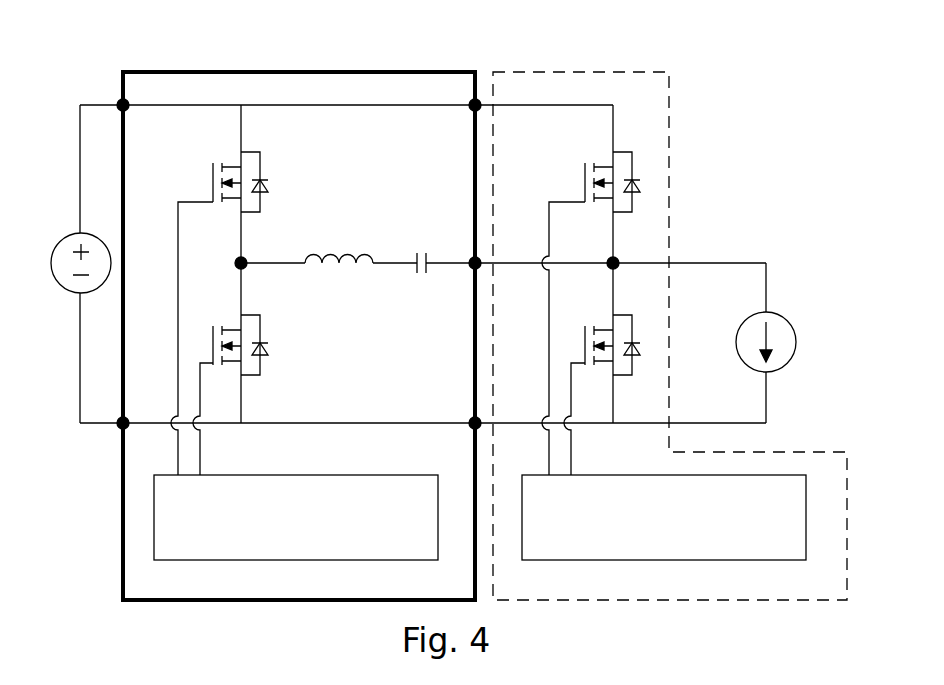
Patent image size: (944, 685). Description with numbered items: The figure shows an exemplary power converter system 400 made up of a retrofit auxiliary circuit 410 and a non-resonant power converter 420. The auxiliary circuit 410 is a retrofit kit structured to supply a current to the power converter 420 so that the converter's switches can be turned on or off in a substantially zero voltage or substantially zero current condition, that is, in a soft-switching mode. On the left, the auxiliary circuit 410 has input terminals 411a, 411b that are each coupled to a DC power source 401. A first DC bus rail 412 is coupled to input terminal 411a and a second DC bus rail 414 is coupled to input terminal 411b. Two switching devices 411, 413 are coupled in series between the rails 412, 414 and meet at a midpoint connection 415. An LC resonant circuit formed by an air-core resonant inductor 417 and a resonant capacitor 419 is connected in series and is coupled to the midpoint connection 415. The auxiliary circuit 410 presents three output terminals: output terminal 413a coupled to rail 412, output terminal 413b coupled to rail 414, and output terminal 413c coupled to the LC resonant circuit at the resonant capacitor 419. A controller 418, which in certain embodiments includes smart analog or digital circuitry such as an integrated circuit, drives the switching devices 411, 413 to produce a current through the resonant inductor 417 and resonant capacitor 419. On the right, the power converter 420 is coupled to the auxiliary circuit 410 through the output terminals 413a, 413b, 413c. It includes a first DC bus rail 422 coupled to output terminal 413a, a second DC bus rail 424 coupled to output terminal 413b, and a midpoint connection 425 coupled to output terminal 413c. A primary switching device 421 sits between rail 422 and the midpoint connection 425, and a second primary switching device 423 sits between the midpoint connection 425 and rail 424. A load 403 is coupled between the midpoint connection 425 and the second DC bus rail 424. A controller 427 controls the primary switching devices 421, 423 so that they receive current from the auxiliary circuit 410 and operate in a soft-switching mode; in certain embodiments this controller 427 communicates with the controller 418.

The power converter system 400 is at (744, 75).
The DC power source 401 is at (70, 242).
The load 403 is at (785, 312).
The retrofit auxiliary circuit 410 is at (198, 72).
The switching device 411 is at (255, 152).
The input terminal 411a is at (121, 103).
The input terminal 411b is at (121, 430).
The first DC bus rail 412 is at (296, 105).
The switching device 413 is at (255, 315).
The output terminal 413a is at (470, 108).
The output terminal 413b is at (470, 421).
The output terminal 413c is at (470, 266).
The second DC bus rail 414 is at (272, 423).
The midpoint connection 415 is at (238, 259).
The air-core resonant inductor 417 is at (328, 252).
The controller 418 is at (306, 475).
The resonant capacitor 419 is at (418, 252).
The non-resonant power converter 420 is at (633, 72).
The primary switching device 421 is at (627, 152).
The first DC bus rail 422 is at (536, 105).
The primary switching device 423 is at (628, 315).
The second DC bus rail 424 is at (600, 423).
The midpoint connection 425 is at (616, 259).
The controller 427 is at (640, 475).